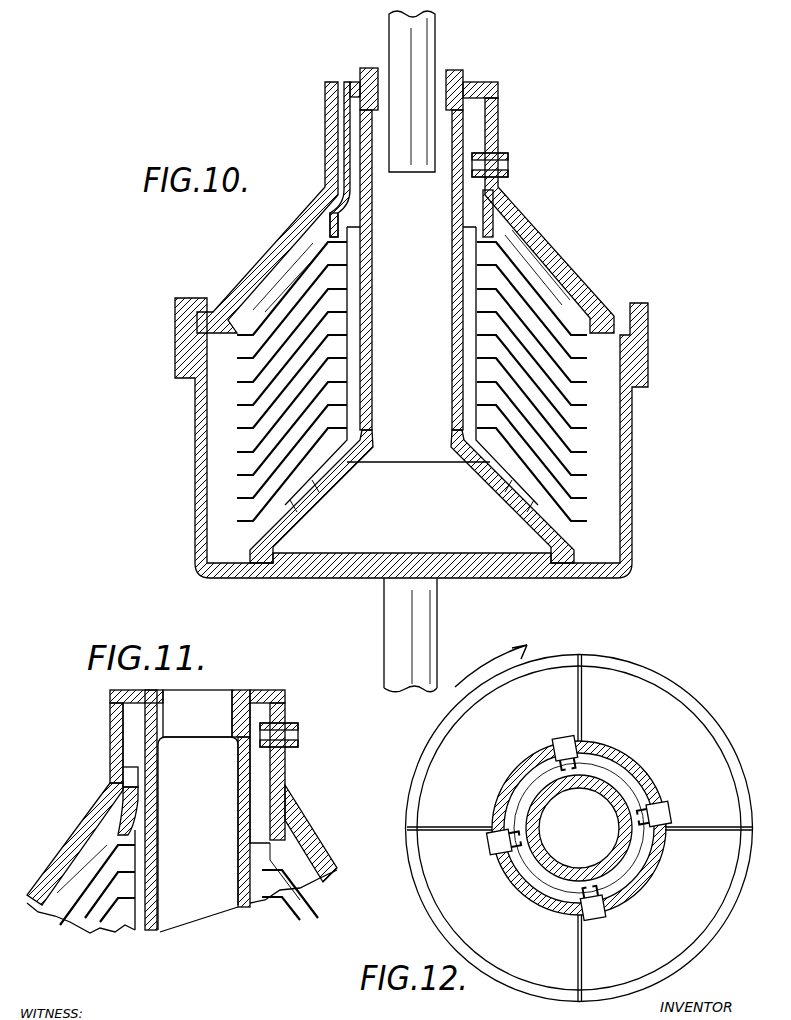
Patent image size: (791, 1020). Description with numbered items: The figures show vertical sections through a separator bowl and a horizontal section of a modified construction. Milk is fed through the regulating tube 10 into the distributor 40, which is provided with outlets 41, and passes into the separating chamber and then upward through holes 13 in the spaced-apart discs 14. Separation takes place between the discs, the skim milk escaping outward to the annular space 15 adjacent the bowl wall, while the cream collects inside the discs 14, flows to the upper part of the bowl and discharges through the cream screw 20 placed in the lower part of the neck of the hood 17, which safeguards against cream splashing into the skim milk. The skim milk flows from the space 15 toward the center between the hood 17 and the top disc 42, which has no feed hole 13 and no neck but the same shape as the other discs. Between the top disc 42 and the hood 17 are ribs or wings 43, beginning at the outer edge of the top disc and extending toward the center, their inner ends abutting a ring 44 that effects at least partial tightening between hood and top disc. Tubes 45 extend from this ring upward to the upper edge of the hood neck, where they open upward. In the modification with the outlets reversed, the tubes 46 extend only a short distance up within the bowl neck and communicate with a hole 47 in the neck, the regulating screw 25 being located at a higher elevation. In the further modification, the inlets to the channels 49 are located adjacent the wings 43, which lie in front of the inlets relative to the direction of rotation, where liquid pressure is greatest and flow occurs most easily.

In FIG. 10, the regulating tube 10 is at (433, 53).
In FIG. 10, the holes 13 is at (523, 325).
In FIG. 10, the spaced-apart discs 14 is at (563, 445).
In FIG. 10, the annular space 15 is at (223, 453).
In FIG. 10, the hood 17 is at (547, 248).
In FIG. 11, the hood 17 is at (286, 705).
In FIG. 10, the cream screw 20 is at (505, 158).
In FIG. 11, the regulating screw 25 is at (298, 733).
In FIG. 10, the distributor 40 is at (460, 73).
In FIG. 11, the distributor 40 is at (233, 693).
In FIG. 10, the outlets 41 is at (432, 506).
In FIG. 10, the top disc 42 is at (262, 300).
In FIG. 12, the top disc 42 is at (440, 883).
In FIG. 10, the ribs or wings 43 is at (285, 273).
In FIG. 11, the ribs or wings 43 is at (92, 857).
In FIG. 12, the ribs or wings 43 is at (585, 707).
In FIG. 10, the ring 44 is at (332, 230).
In FIG. 11, the ring 44 is at (280, 830).
In FIG. 10, the tubes 45 is at (343, 120).
In FIG. 11, the tubes 46 is at (120, 807).
In FIG. 11, the hole 47 is at (110, 777).
In FIG. 12, the channels 49 is at (512, 790).